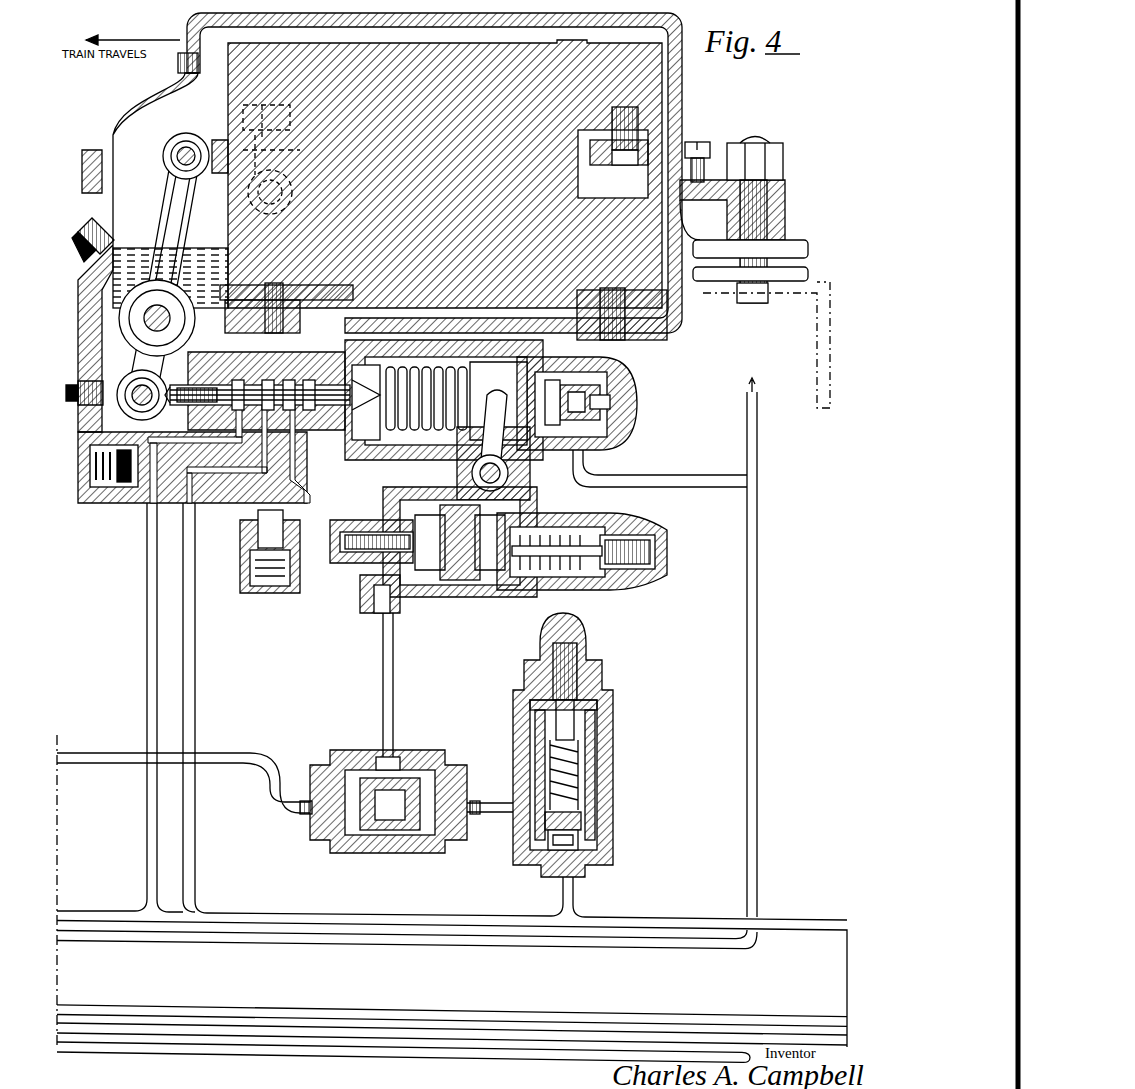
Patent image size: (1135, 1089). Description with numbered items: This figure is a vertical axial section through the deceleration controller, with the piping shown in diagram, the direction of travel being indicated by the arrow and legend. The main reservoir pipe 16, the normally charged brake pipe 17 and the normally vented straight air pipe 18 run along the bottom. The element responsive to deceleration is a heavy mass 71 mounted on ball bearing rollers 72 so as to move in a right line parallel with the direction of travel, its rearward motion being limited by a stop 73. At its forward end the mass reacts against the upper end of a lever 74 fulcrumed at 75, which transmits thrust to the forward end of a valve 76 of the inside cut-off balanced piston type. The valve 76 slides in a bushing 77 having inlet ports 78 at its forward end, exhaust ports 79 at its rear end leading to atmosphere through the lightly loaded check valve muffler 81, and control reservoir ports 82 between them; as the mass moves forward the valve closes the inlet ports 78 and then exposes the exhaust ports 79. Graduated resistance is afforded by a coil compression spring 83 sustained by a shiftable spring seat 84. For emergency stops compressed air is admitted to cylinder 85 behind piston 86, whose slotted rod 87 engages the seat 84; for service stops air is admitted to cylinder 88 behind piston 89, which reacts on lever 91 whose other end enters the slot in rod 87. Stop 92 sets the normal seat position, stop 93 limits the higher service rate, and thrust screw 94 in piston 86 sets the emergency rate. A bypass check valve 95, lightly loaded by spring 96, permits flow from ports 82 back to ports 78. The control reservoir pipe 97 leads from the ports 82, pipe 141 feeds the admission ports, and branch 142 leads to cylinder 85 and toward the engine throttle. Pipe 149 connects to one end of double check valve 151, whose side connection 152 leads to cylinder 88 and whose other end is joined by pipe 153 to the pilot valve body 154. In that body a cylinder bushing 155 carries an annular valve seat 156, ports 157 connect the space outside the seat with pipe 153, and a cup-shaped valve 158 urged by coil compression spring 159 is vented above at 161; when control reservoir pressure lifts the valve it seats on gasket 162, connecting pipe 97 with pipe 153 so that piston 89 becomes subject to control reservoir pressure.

The main reservoir pipe 16 is at (101, 1010).
The brake pipe 17 is at (215, 1030).
The straight air pipe 18 is at (155, 1056).
The mass 71 is at (635, 79).
The ball bearing rollers 72 is at (283, 298).
The stop 73 is at (680, 205).
The lever 74 is at (165, 210).
The fulcrum 75 is at (165, 322).
The valve 76 is at (225, 395).
The bushing 77 is at (192, 410).
The inlet ports 78 is at (242, 390).
The exhaust ports 79 is at (295, 385).
The check valve muffler 81 is at (242, 540).
The control reservoir ports 82 is at (272, 385).
The coil compression spring 83 is at (405, 370).
The spring seat 84 is at (480, 368).
The cylinder 85 is at (617, 395).
The piston 86 is at (628, 427).
The slotted rod 87 is at (502, 439).
The cylinder 88 is at (390, 573).
The piston 89 is at (450, 583).
The lever 91 is at (530, 482).
The stop 92 is at (368, 527).
The stop 93 is at (632, 560).
The thrust screw 94 is at (585, 398).
The bypass check valve 95 is at (90, 460).
The spring 96 is at (92, 480).
The control reservoir pipe 97 is at (188, 655).
The pipe 141 is at (150, 597).
The branch pipe 142 is at (745, 538).
The pipe 149 is at (92, 755).
The double check valve 151 is at (368, 753).
The side connection 152 is at (393, 673).
The pipe 153 is at (485, 807).
The pilot valve body 154 is at (612, 757).
The cylinder bushing 155 is at (600, 778).
The annular valve seat 156 is at (592, 827).
The ports 157 is at (530, 826).
The cup-shaped valve 158 is at (602, 810).
The coil compression spring 159 is at (535, 757).
The vent 161 is at (527, 702).
The gasket 162 is at (525, 722).